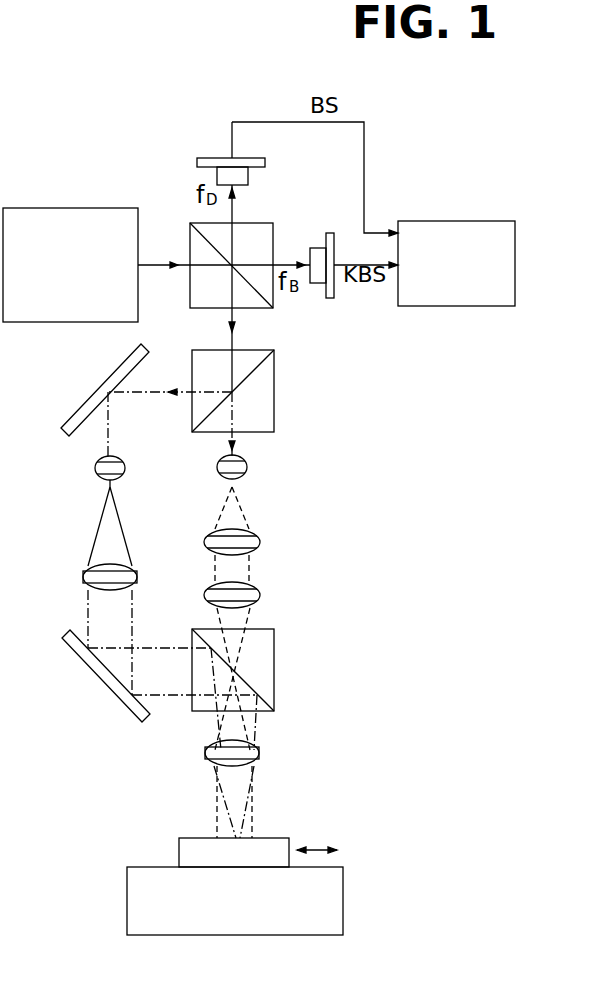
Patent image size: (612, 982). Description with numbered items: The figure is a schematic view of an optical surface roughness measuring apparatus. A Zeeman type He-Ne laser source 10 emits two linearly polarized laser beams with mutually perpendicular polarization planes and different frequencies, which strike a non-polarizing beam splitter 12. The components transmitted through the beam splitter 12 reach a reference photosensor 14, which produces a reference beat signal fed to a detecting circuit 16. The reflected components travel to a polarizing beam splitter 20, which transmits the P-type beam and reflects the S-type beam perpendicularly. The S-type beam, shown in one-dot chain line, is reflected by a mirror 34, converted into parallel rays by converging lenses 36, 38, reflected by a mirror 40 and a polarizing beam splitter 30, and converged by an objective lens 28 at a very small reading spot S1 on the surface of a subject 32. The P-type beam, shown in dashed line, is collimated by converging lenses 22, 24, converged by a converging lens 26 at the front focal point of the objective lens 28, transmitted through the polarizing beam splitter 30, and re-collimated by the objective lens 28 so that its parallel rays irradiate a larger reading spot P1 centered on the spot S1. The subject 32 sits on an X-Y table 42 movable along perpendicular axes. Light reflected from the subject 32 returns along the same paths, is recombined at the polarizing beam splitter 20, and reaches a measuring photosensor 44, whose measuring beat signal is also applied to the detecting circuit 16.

The Zeeman type He-Ne laser source 10 is at (37, 222).
The non-polarizing beam splitter 12 is at (255, 228).
The reference photosensor 14 is at (318, 284).
The detecting circuit 16 is at (454, 306).
The polarizing beam splitter 20 is at (265, 410).
The converging lens 22 is at (247, 468).
The converging lens 24 is at (255, 542).
The converging lens 26 is at (255, 595).
The objective lens 28 is at (208, 752).
The polarizing beam splitter 30 is at (265, 668).
The subject 32 is at (188, 856).
The mirror 34 is at (85, 407).
The converging lens 36 is at (95, 470).
The converging lens 38 is at (83, 577).
The mirror 40 is at (85, 657).
The X-Y table 42 is at (136, 888).
The measuring photosensor 44 is at (217, 178).
The reading spot S1 is at (242, 838).
The reading spot P1 is at (247, 838).